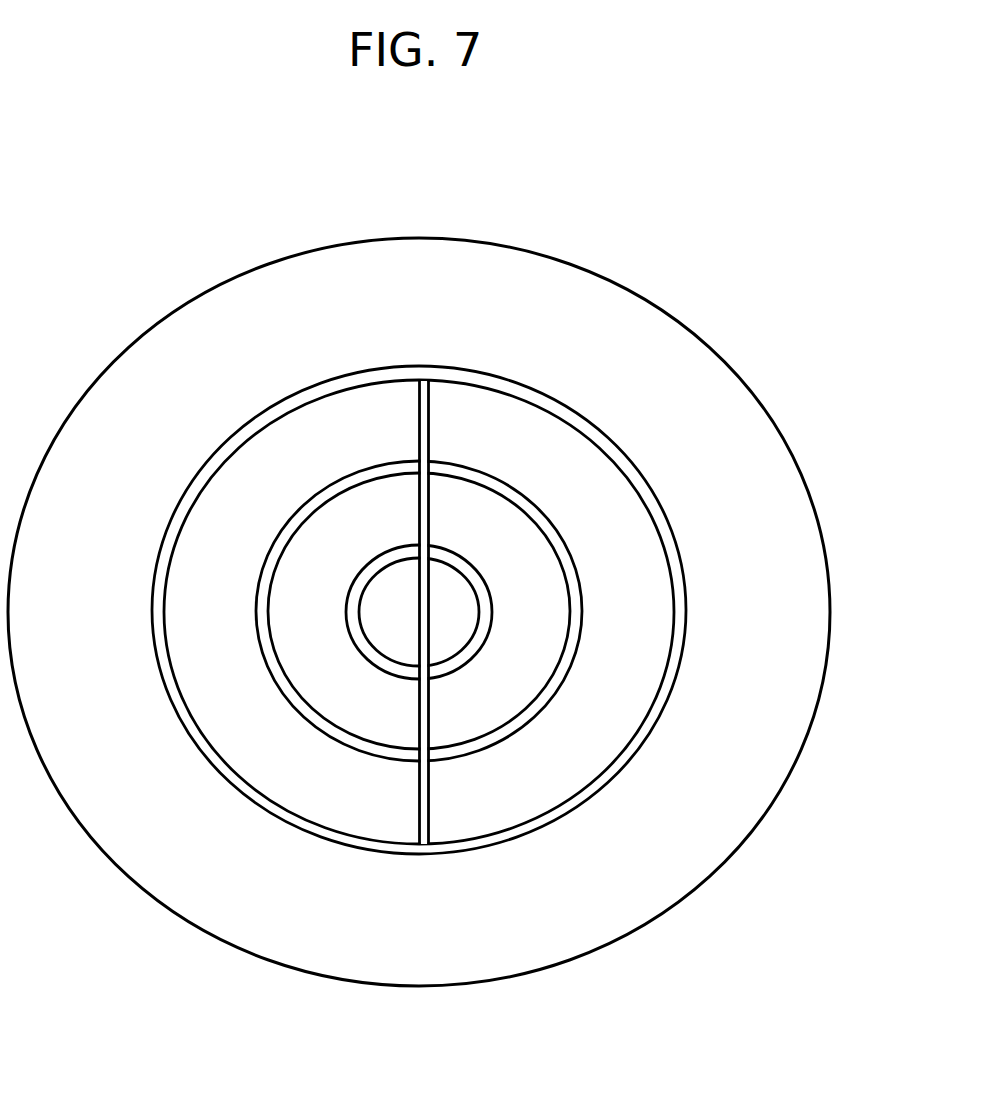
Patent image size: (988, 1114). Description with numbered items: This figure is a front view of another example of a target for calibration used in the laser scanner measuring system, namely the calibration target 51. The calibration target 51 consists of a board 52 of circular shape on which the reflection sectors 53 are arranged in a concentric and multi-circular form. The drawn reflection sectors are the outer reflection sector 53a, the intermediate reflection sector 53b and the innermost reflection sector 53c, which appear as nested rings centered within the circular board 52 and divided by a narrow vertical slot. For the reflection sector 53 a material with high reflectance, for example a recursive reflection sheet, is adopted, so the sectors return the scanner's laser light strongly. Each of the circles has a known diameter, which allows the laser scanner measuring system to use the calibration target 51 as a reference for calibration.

The calibration target 51 is at (419, 570).
The board 52 is at (682, 317).
The reflection sectors 53 is at (385, 513).
The reflection sector 53a is at (352, 376).
The reflection sector 53b is at (337, 483).
The reflection sector 53c is at (363, 568).